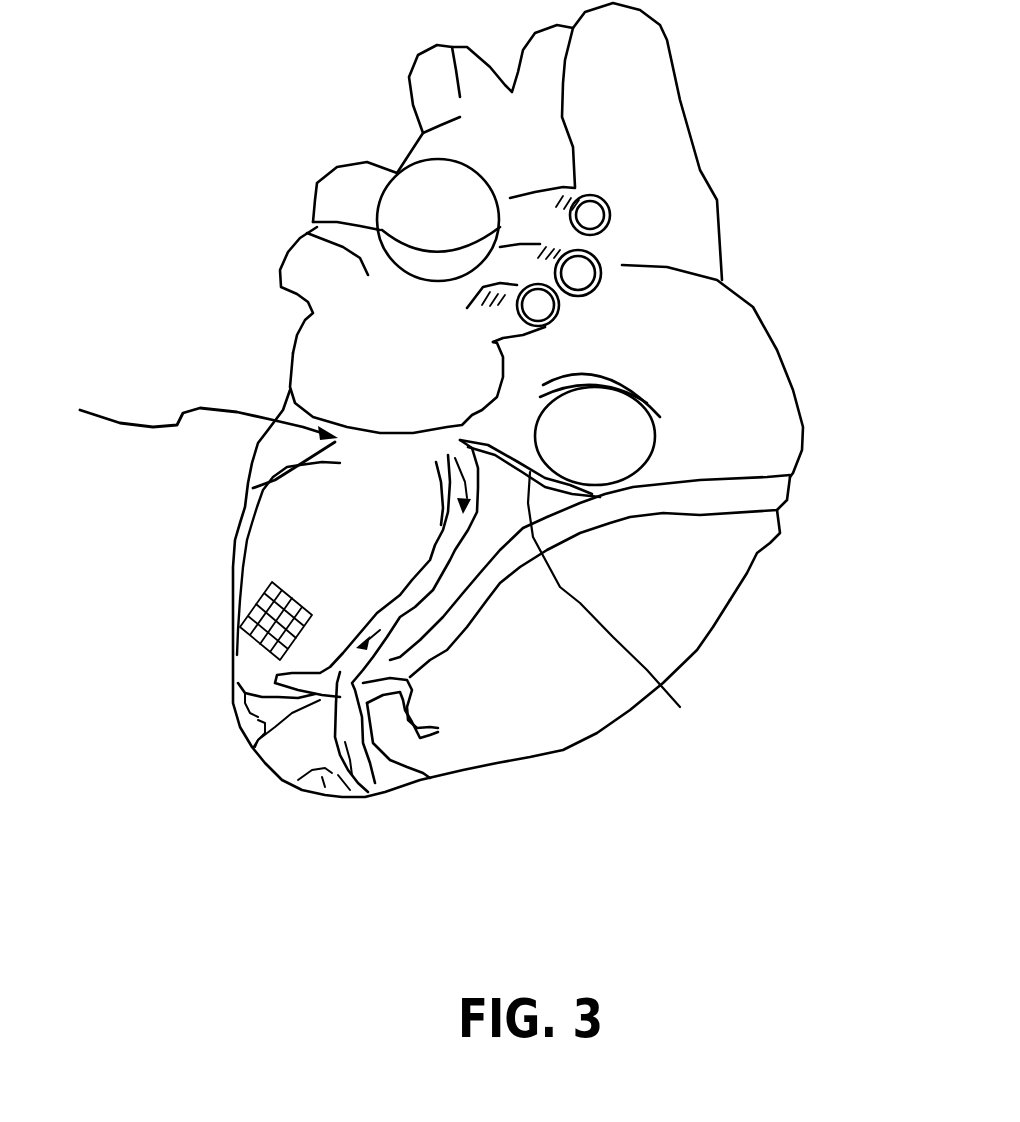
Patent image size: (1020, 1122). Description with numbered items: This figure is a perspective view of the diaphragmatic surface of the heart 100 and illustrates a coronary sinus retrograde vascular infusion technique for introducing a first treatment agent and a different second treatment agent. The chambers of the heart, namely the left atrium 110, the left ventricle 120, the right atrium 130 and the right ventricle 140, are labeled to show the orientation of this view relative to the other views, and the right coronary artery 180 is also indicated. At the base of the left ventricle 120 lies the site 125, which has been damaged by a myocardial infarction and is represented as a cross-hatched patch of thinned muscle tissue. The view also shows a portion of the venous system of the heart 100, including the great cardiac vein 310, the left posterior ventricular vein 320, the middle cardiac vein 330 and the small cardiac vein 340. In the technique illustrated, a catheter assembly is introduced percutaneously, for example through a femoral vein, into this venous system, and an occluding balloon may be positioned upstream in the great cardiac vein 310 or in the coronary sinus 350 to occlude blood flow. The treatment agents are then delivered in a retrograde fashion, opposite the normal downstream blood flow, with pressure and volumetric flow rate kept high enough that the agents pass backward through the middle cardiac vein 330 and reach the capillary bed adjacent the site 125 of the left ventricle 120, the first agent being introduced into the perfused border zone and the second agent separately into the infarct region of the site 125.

The heart 100 is at (757, 130).
The left atrium 110 is at (315, 340).
The left ventricle 120 is at (317, 513).
The site 125 is at (258, 622).
The right atrium 130 is at (757, 357).
The right ventricle 140 is at (713, 603).
The right coronary artery 180 is at (790, 490).
The great cardiac vein 310 is at (290, 398).
The left posterior ventricular vein 320 is at (240, 519).
The middle cardiac vein 330 is at (430, 580).
The small cardiac vein 340 is at (613, 606).
The coronary sinus 350 is at (186, 440).